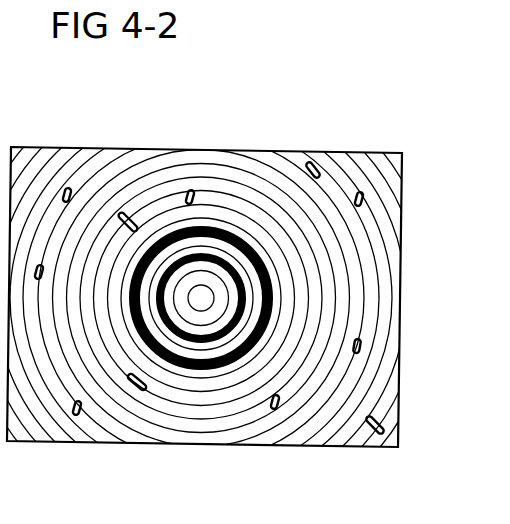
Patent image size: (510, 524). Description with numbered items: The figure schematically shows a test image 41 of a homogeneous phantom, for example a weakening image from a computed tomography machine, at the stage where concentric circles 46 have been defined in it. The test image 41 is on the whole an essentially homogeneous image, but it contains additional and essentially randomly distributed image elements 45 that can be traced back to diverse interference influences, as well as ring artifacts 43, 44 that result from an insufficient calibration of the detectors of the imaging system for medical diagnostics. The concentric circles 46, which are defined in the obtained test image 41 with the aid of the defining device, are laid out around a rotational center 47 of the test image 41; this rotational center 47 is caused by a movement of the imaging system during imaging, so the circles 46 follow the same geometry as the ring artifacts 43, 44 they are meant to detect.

The test image 41 is at (112, 442).
The ring artifact 43 is at (200, 163).
The ring artifact 44 is at (207, 350).
The image elements 45 is at (313, 162).
The concentric circles 46 is at (63, 165).
The rotational center 47 is at (201, 300).